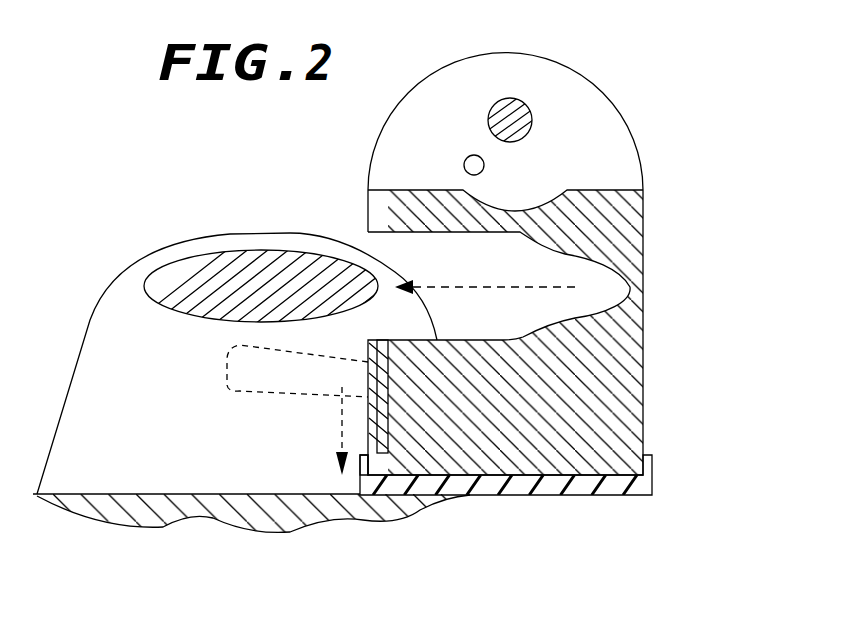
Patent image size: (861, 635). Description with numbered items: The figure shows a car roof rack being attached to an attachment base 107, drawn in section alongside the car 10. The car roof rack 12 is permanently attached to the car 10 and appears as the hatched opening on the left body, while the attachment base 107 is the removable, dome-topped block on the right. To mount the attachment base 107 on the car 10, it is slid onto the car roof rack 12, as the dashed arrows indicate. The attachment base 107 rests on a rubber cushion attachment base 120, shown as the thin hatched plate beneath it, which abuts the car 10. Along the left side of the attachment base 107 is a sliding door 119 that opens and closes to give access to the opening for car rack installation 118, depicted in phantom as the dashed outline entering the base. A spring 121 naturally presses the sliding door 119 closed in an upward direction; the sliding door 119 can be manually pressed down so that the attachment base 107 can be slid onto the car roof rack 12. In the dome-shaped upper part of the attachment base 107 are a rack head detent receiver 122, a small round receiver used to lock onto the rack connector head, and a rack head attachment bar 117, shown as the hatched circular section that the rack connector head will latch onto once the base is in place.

The car 10 is at (153, 494).
The car roof rack 12 is at (197, 258).
The attachment base 107 is at (680, 272).
The rack head attachment bar 117 is at (530, 110).
The opening for car rack installation 118 is at (365, 314).
The sliding door 119 is at (385, 418).
The rubber cushion attachment base 120 is at (650, 479).
The spring 121 is at (373, 465).
The rack head detent receiver 122 is at (474, 155).